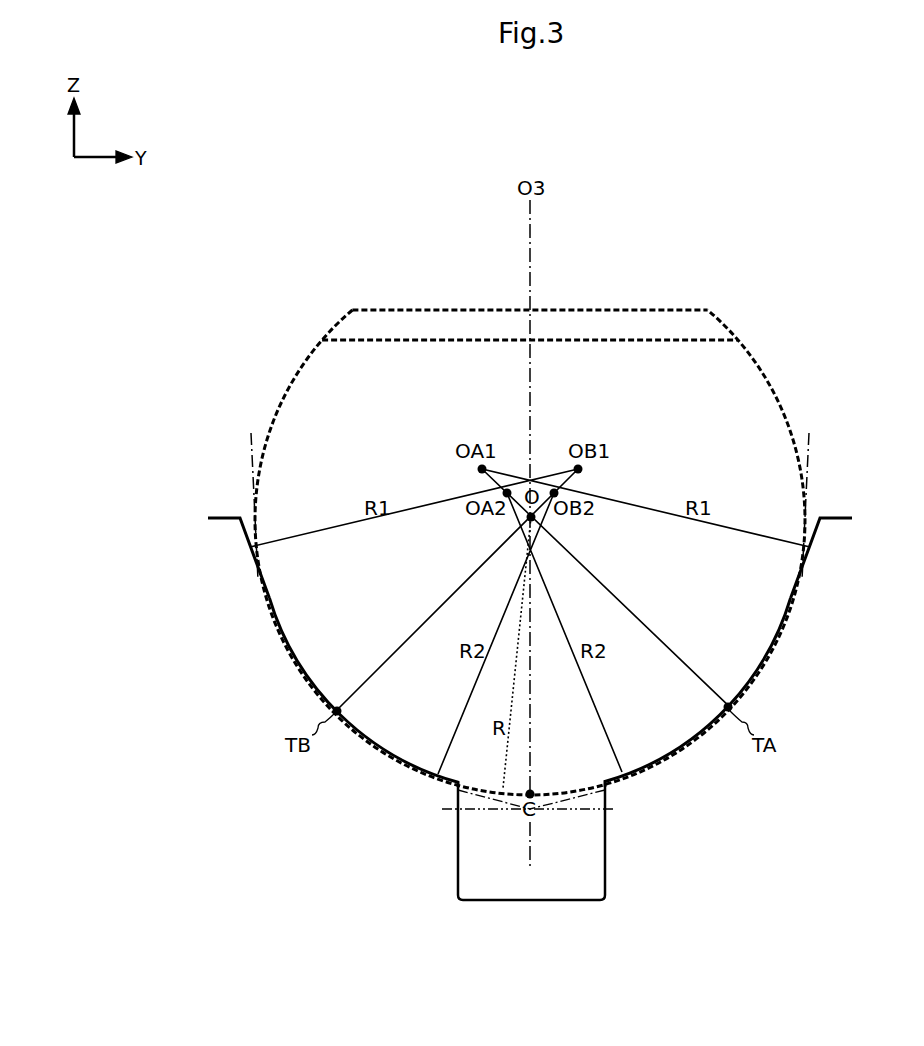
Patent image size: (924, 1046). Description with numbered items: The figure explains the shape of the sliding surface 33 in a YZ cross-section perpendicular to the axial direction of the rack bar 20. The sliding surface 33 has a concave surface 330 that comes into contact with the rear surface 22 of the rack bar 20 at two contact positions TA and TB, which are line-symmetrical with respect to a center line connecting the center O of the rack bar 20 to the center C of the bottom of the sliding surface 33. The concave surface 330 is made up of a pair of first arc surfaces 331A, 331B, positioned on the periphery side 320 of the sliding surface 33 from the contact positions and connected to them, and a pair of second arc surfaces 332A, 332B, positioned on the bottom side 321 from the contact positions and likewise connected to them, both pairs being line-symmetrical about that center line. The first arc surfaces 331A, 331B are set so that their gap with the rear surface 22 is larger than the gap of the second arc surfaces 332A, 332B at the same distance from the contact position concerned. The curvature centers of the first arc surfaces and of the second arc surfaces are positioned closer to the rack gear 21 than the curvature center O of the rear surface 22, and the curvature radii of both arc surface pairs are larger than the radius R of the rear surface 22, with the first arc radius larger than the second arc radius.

The sliding surface 33 is at (874, 173).
The rack bar 20 is at (753, 355).
The rack gear 21 is at (665, 310).
The rear surface 22 is at (797, 443).
The periphery side 320 is at (842, 528).
The bottom side 321 is at (842, 710).
The concave surface 330 is at (683, 741).
The first arc surface 331A is at (818, 527).
The first arc surface 331B is at (243, 527).
The second arc surface 332A is at (647, 758).
The second arc surface 332B is at (378, 742).